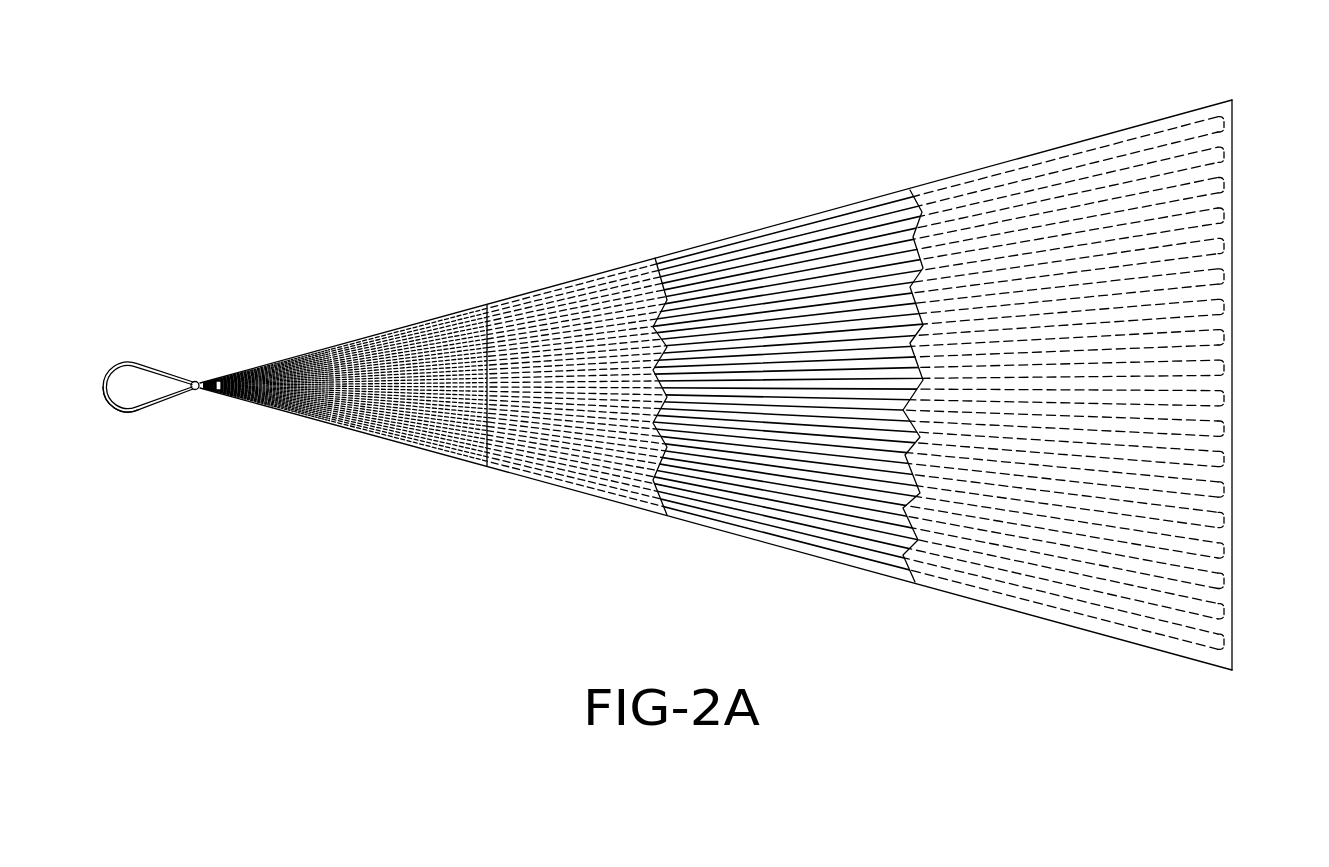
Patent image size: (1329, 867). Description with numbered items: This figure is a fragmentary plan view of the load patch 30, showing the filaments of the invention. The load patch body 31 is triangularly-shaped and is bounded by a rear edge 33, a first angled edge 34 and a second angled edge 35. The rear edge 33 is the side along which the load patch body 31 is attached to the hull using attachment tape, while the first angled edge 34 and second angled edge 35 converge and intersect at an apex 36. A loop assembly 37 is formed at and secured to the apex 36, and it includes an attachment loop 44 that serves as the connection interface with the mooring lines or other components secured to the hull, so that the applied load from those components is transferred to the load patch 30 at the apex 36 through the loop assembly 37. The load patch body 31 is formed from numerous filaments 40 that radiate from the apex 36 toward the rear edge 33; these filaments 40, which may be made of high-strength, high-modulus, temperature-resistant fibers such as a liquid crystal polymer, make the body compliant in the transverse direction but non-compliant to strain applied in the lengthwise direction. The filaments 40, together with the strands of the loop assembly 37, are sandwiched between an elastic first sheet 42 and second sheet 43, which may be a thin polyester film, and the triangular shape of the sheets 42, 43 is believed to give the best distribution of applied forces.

The load patch 30 is at (756, 370).
The load patch body 31 is at (1055, 140).
The rear edge 33 is at (1233, 540).
The first angled edge 34 is at (556, 288).
The second angled edge 35 is at (553, 488).
The apex 36 is at (195, 368).
The loop assembly 37 is at (130, 346).
The filaments 40 is at (788, 515).
The first sheet 42 is at (1225, 636).
The second sheet 43 is at (873, 202).
The attachment loop 44 is at (110, 410).